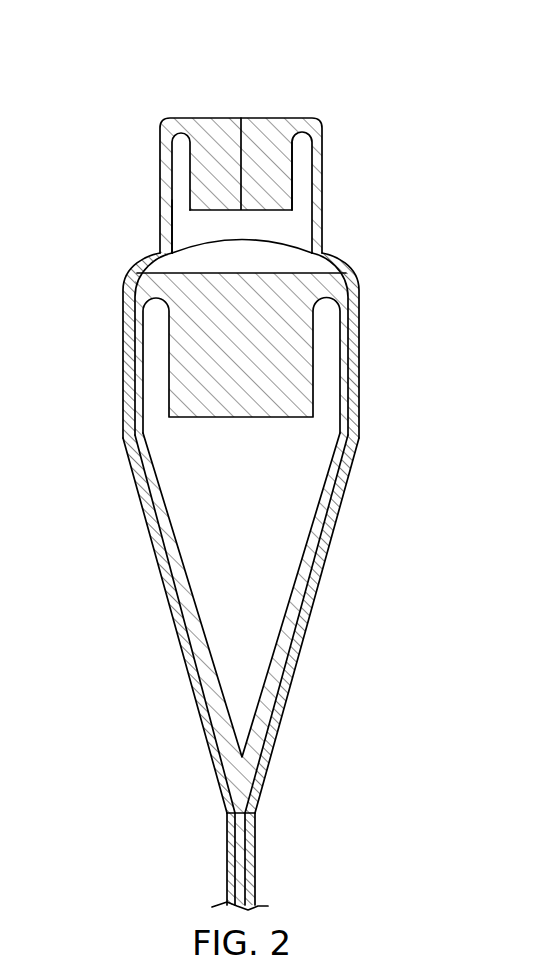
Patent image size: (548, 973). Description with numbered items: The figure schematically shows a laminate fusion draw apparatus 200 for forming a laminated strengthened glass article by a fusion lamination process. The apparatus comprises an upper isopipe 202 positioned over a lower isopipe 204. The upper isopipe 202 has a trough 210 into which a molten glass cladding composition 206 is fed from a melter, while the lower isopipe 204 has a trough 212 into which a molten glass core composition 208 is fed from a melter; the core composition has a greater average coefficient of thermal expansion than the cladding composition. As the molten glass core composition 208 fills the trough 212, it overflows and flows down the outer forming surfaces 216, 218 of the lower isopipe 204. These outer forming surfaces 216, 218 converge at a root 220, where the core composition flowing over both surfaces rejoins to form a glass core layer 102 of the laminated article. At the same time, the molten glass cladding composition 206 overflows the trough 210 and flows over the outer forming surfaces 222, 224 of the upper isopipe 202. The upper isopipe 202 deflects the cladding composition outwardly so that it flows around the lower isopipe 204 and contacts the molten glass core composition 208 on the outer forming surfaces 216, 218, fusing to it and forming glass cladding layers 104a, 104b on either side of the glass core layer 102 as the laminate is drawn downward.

The laminate fusion draw apparatus 200 is at (367, 89).
The molten glass cladding composition 206 is at (238, 125).
The upper isopipe 202 is at (292, 142).
The trough 210 is at (190, 172).
The outer forming surface 222 is at (172, 218).
The outer forming surface 224 is at (318, 185).
The molten glass core composition 208 is at (300, 293).
The lower isopipe 204 is at (330, 337).
The trough 212 is at (168, 368).
The outer forming surface 218 is at (158, 488).
The outer forming surface 216 is at (320, 505).
The root 220 is at (242, 757).
The glass core layer 102 is at (243, 854).
The glass cladding layer 104a is at (227, 867).
The glass cladding layer 104b is at (257, 855).